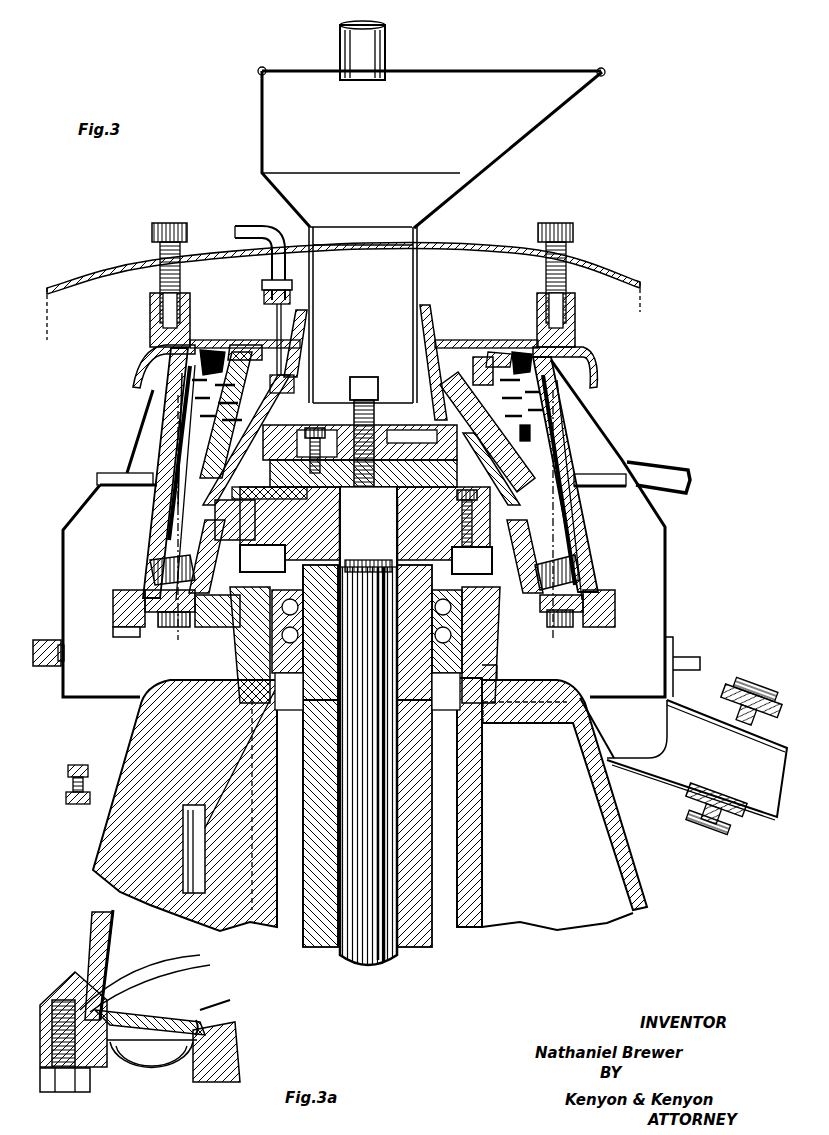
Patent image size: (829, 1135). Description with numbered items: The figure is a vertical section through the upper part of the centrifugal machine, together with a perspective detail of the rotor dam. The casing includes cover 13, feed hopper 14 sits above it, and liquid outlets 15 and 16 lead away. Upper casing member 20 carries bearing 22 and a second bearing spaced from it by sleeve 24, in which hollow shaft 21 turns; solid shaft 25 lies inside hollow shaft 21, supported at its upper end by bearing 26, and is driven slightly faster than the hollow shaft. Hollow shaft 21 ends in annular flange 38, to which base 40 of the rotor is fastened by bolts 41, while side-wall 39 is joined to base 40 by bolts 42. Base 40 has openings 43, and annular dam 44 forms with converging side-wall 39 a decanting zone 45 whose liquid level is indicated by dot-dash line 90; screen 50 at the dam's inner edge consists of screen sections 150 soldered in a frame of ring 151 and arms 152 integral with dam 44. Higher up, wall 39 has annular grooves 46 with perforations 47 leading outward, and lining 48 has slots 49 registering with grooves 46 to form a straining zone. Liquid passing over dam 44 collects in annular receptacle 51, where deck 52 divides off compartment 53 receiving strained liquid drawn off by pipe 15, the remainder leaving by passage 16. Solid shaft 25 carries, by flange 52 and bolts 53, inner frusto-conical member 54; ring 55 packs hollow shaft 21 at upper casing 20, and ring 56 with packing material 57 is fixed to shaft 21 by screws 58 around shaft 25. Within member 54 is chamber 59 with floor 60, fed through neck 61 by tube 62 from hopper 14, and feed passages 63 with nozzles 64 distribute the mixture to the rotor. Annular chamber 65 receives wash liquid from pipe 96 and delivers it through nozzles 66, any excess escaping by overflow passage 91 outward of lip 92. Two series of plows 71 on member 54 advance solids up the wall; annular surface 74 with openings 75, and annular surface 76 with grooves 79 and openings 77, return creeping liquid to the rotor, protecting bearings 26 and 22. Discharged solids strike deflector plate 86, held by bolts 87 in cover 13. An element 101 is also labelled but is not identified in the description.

In FIG. 3, the cover 13 is at (612, 252).
In FIG. 3, the feed hopper 14 is at (532, 123).
In FIG. 3, the liquid discharge pipe 15 is at (668, 480).
In FIG. 3, the liquid discharge passage 16 is at (768, 815).
In FIG. 3, the upper casing member 20 is at (626, 852).
In FIG. 3, the hollow shaft 21 is at (325, 950).
In FIG. 3, the bearing 22 is at (300, 672).
In FIG. 3, the sleeve 24 is at (300, 770).
In FIG. 3, the solid shaft 25 is at (368, 732).
In FIG. 3, the bearing 26 is at (365, 529).
In FIG. 3, the annular flange 38 is at (366, 559).
In FIG. 3, the side-wall 39 is at (150, 530).
In FIG. 3A, the side-wall 39 is at (90, 933).
In FIG. 3, the base 40 is at (180, 627).
In FIG. 3A, the base 40 is at (40, 1052).
In FIG. 3, the bolts 41 is at (503, 467).
In FIG. 3, the bolts 42 is at (125, 637).
In FIG. 3, the openings 43 is at (140, 637).
In FIG. 3, the annular dam 44 is at (620, 580).
In FIG. 3A, the annular dam 44 is at (125, 1062).
In FIG. 3, the decanting compartment 45 is at (381, 556).
In FIG. 3, the internal annular grooves 46 is at (165, 428).
In FIG. 3, the perforations 47 is at (155, 410).
In FIG. 3, the internal lining 48 is at (175, 455).
In FIG. 3A, the internal lining 48 is at (108, 950).
In FIG. 3, the slots 49 is at (205, 432).
In FIG. 3, the screen 50 is at (165, 627).
In FIG. 3A, the screen 50 is at (160, 1038).
In FIG. 3, the annular receptacle 51 is at (668, 555).
In FIG. 3, the partition or deck 52 is at (606, 510).
In FIG. 3, the compartment 53 is at (318, 428).
In FIG. 3, the inner frusto-conical member 54 is at (245, 345).
In FIG. 3, the ring 55 is at (268, 628).
In FIG. 3, the ring 56 is at (268, 492).
In FIG. 3, the packing material 57 is at (363, 473).
In FIG. 3, the screws 58 is at (462, 488).
In FIG. 3, the chamber 59 is at (360, 430).
In FIG. 3, the floor 60 is at (362, 375).
In FIG. 3, the neck 61 is at (430, 318).
In FIG. 3, the tube 62 is at (418, 275).
In FIG. 3, the feed passages 63 is at (232, 415).
In FIG. 3, the nozzles 64 is at (246, 440).
In FIG. 3, the annular chamber 65 is at (455, 372).
In FIG. 3, the nozzles 66 is at (530, 437).
In FIG. 3, the plows 71 is at (215, 350).
In FIG. 3, the annular surface 74 is at (189, 440).
In FIG. 3, the openings 75 is at (346, 515).
In FIG. 3, the annular surface 76 is at (230, 620).
In FIG. 3, the openings 77 is at (210, 630).
In FIG. 3, the grooves 79 is at (190, 538).
In FIG. 3, the annular deflector plate 86 is at (598, 366).
In FIG. 3, the bolts 87 is at (573, 232).
In FIG. 3, the dot-dash line 90 is at (548, 530).
In FIG. 3, the overflow passage 91 is at (491, 466).
In FIG. 3, the lip 92 is at (495, 352).
In FIG. 3, the pipe 96 is at (262, 222).
In FIG. 3, the inlet pipe 101 is at (386, 50).
In FIG. 3A, the screen sections 150 is at (165, 1000).
In FIG. 3A, the ring 151 is at (210, 1038).
In FIG. 3A, the arms 152 is at (220, 1010).